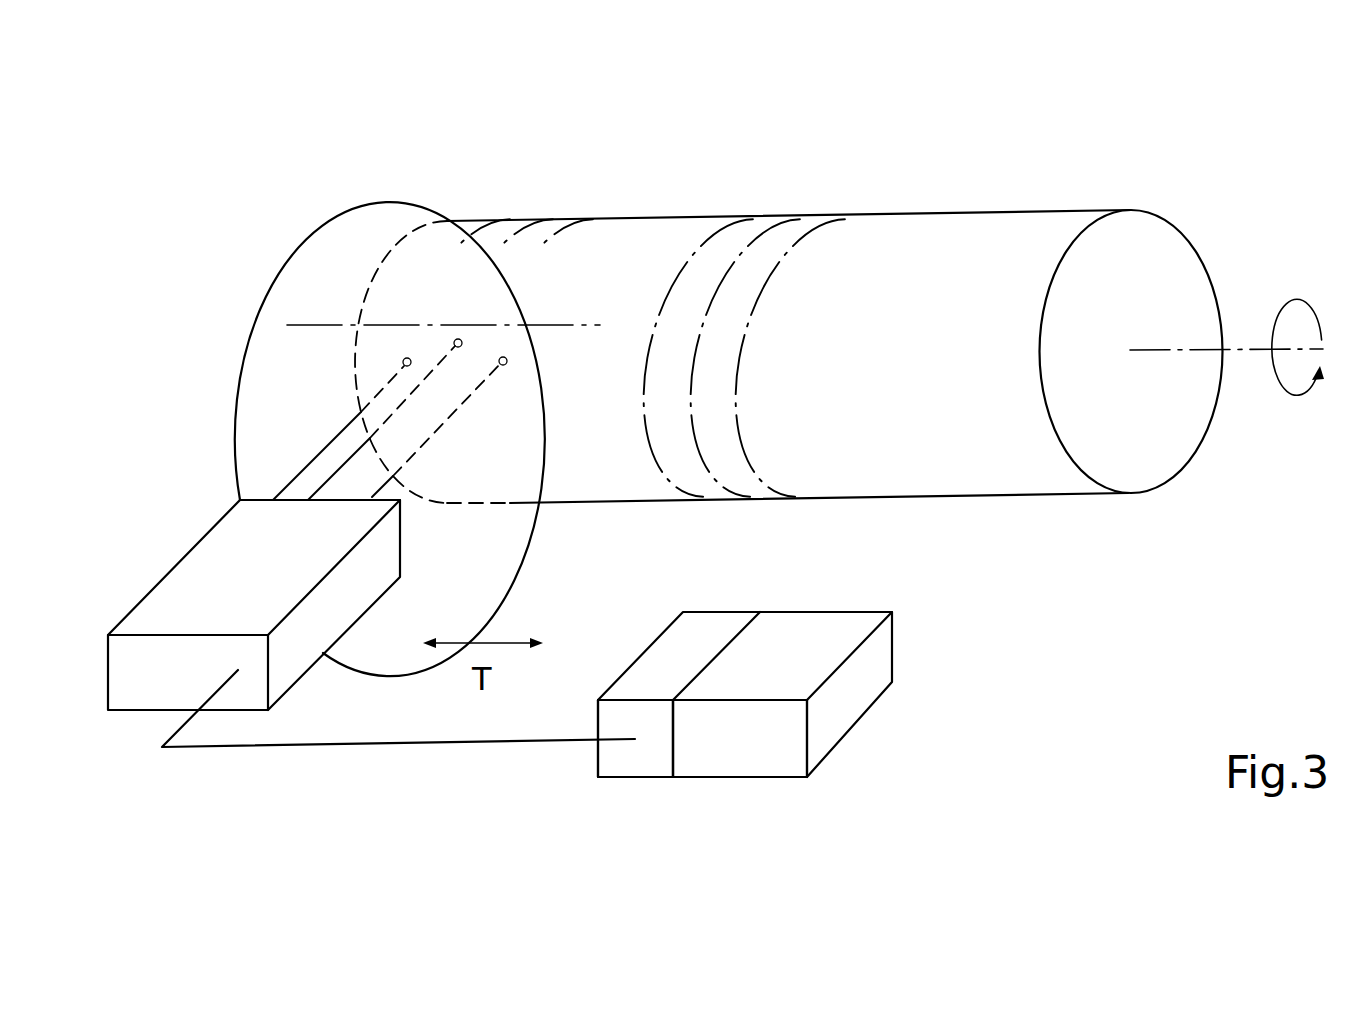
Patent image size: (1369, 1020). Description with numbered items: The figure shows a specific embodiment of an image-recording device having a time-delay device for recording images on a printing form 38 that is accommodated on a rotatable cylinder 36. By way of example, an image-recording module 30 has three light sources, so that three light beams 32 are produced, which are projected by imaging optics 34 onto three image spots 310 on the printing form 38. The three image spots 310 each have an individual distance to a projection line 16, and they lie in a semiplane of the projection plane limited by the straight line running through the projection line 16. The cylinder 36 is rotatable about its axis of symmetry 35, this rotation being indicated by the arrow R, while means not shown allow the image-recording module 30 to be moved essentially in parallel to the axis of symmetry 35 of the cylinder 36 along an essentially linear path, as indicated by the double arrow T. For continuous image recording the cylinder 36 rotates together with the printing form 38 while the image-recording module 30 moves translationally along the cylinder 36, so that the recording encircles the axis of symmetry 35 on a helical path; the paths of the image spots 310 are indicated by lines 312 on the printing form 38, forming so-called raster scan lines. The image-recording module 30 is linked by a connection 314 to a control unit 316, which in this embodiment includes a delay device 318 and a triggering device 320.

The projection line 16 is at (313, 330).
The image-recording module 30 is at (140, 688).
The light beams 32 is at (415, 453).
The imaging optics 34 is at (272, 288).
The axis of symmetry 35 is at (1160, 348).
The cylinder 36 is at (1158, 247).
The printing form 38 is at (997, 253).
The image spots 310 is at (503, 357).
The grooves 312 is at (603, 221).
The connection 314 is at (382, 743).
The control unit 316 is at (812, 592).
The delay device 318 is at (630, 758).
The triggering device 320 is at (733, 747).